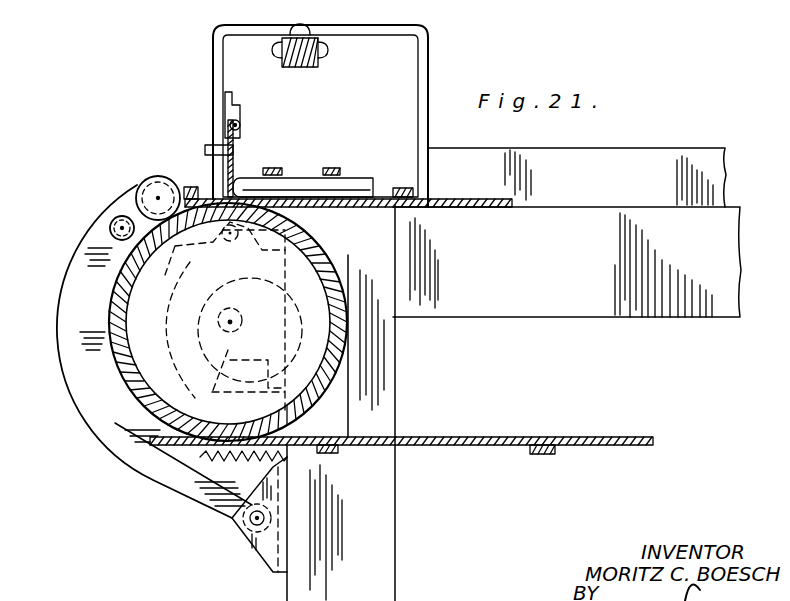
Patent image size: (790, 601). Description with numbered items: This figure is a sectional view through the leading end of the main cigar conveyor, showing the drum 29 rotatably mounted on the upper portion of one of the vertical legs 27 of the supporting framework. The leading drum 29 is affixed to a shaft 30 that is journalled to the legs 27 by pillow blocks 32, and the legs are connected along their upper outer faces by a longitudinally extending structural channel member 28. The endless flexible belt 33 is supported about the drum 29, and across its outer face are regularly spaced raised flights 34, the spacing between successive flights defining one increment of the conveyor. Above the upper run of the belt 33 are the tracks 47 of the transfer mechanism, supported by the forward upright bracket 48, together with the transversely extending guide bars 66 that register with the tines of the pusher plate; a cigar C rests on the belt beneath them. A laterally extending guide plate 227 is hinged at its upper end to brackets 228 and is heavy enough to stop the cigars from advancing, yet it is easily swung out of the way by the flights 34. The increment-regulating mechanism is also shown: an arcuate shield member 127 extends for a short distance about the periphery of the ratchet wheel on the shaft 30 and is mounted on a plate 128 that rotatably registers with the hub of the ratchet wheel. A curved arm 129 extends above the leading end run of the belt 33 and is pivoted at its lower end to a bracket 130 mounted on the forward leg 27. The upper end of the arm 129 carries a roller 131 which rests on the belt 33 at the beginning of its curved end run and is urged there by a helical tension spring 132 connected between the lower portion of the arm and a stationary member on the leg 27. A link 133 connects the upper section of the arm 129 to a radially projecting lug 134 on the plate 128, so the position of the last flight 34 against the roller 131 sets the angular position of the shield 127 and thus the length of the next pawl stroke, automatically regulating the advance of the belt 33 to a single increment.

The forward upright bracket 48 is at (415, 25).
The tracks 47 is at (282, 60).
The brackets 228 is at (225, 110).
The guide plate 227 is at (235, 152).
The guide bars 66 is at (270, 167).
The platen C is at (298, 184).
The flights 34 is at (400, 188).
The endless flexible belt 33 is at (488, 208).
The structural channel members 28 is at (575, 302).
The drum 29 is at (340, 285).
The roller 131 is at (150, 178).
The link 133 is at (118, 217).
The curved arm 129 is at (88, 298).
The arcuate shield member 127 is at (211, 262).
The lug 134 is at (290, 244).
The shaft 30 is at (232, 322).
The plate 128 is at (184, 332).
The pillow blocks 32 is at (248, 385).
The helical tension spring 132 is at (233, 463).
The bracket 130 is at (262, 547).
The vertical legs 27 is at (387, 543).